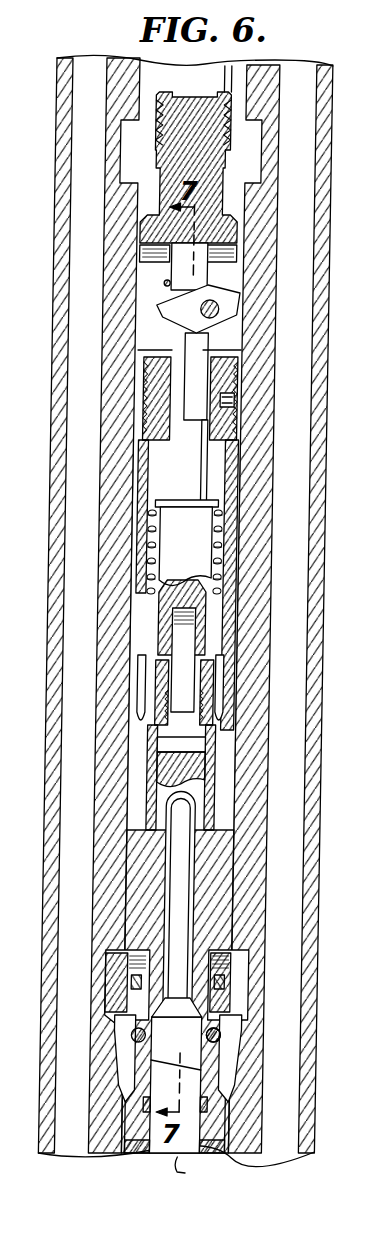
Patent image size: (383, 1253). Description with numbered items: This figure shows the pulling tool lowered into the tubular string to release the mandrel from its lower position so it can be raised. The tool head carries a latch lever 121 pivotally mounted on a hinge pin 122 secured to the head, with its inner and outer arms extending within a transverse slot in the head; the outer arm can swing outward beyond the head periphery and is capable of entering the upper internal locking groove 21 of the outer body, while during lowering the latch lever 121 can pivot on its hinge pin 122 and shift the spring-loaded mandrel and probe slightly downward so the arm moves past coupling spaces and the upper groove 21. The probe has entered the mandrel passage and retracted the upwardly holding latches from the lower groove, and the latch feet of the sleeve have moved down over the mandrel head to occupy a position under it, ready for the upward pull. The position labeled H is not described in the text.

The housing / well casing H is at (93, 76).
The upper internal locking groove 21 is at (262, 150).
The latch lever 121 is at (232, 278).
The hinge pin 122 is at (247, 312).